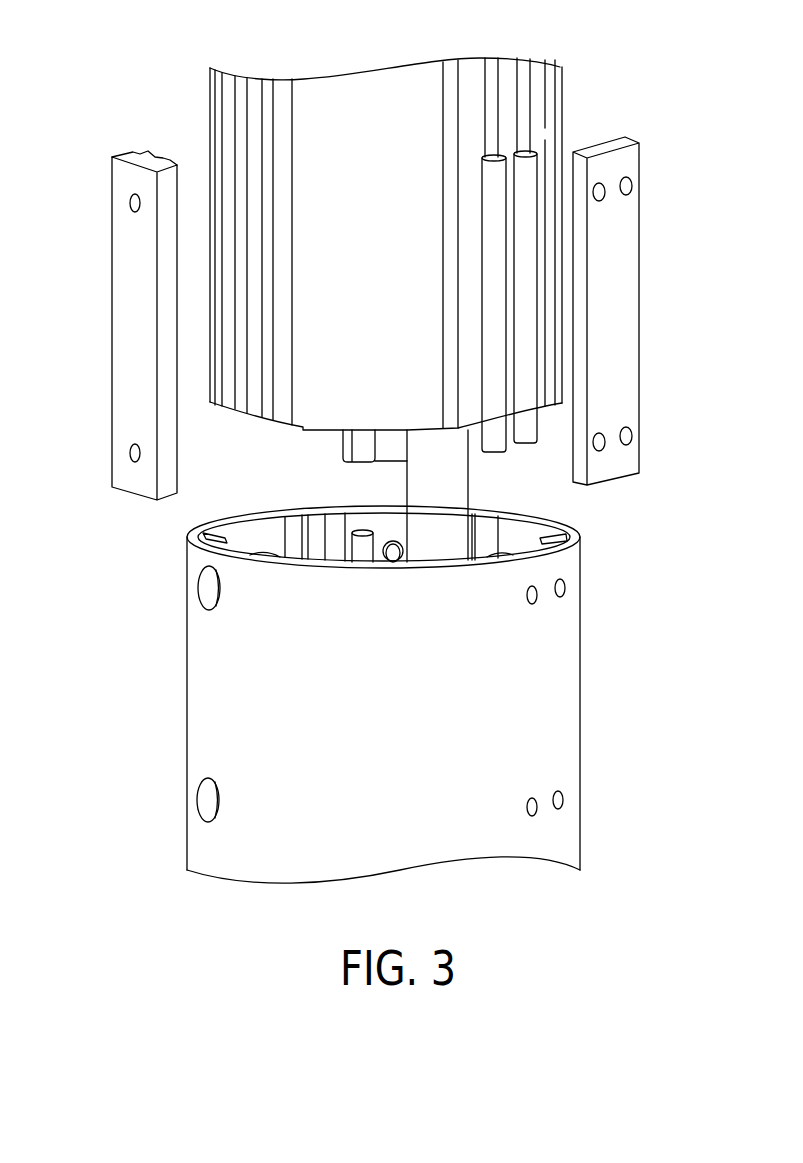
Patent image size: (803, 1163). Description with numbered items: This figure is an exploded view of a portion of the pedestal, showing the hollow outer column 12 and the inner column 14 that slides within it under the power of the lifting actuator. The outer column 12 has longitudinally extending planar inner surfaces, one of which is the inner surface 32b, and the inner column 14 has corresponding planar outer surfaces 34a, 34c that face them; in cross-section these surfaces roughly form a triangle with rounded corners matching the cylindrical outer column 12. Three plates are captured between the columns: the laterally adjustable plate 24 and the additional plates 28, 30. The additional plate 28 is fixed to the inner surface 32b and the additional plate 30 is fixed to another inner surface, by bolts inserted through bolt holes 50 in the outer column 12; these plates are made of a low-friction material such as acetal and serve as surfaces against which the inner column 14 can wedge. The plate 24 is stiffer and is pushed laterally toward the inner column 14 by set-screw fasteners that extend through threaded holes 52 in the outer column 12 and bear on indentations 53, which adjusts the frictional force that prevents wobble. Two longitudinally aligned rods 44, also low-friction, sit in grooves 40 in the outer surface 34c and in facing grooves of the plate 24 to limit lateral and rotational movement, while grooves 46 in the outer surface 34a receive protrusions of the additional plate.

The outer column 12 is at (580, 740).
The inner column 14 is at (210, 100).
The plate 24 is at (627, 372).
The additional plate 28 is at (342, 441).
The additional plate 30 is at (112, 428).
The planar inner surface 32b is at (362, 525).
The planar outer surface 34a is at (227, 143).
The planar outer surface 34c is at (545, 128).
The grooves 40 is at (530, 90).
The rods 44 is at (536, 443).
The grooves 46 is at (273, 97).
The bolt holes 50 is at (197, 800).
The threaded holes 52 is at (563, 805).
The indentations 53 is at (632, 438).